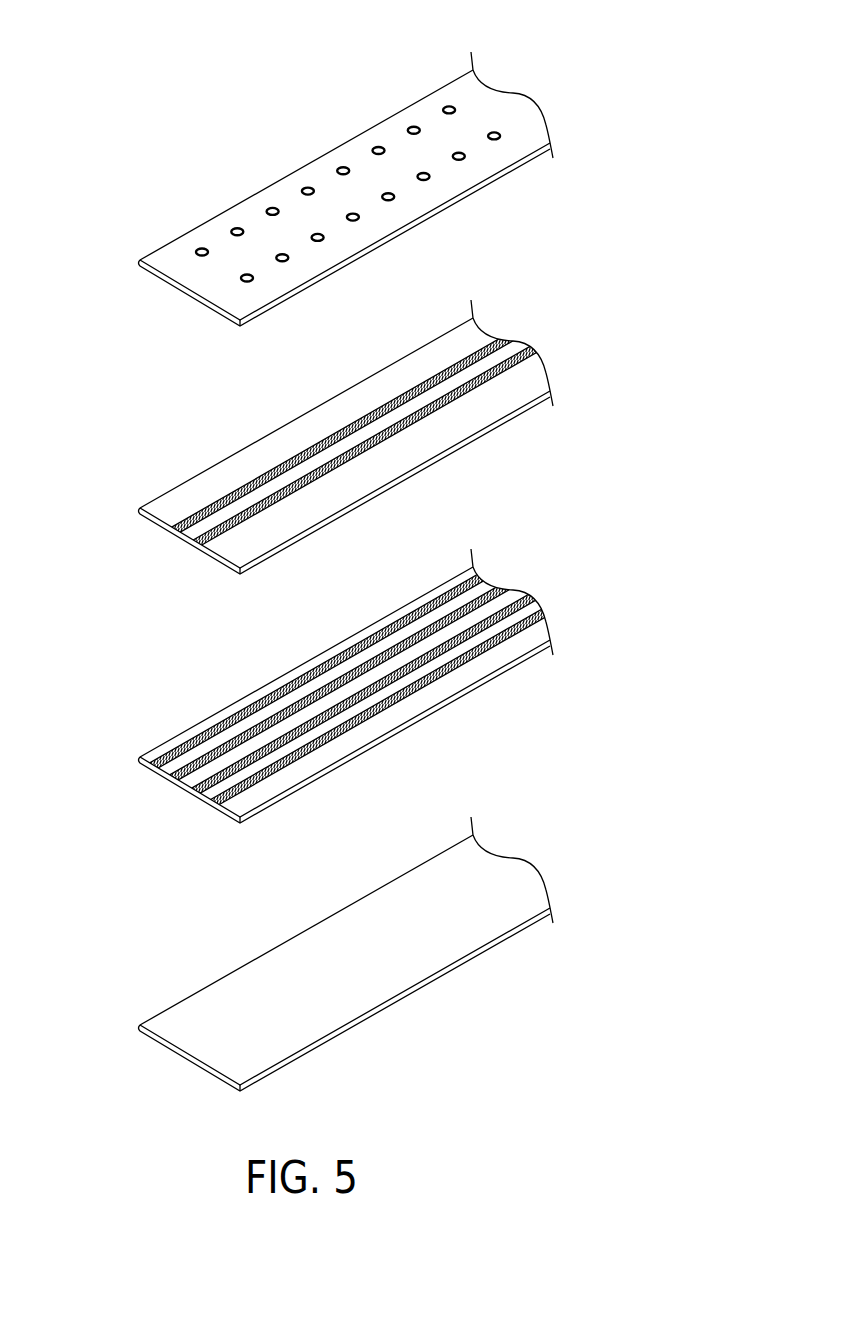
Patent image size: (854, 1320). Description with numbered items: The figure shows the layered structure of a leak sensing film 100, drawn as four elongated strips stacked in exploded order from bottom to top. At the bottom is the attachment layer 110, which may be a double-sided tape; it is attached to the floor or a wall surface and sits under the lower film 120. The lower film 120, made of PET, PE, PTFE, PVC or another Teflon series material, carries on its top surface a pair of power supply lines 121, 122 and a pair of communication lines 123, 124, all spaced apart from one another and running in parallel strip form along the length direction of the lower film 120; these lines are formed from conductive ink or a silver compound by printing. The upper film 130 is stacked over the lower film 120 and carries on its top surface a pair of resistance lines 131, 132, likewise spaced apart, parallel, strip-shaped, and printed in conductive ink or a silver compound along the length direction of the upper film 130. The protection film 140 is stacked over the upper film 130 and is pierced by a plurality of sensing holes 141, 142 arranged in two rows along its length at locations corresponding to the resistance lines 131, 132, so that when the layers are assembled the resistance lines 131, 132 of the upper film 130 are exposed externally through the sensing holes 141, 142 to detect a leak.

The leak sensing film 100 is at (108, 83).
The attachment layer 110 is at (147, 1032).
The lower film 120 is at (298, 675).
The power supply line 121 is at (212, 730).
The power supply line 122 is at (272, 723).
The communication line 123 is at (347, 708).
The communication line 124 is at (427, 682).
The upper film 130 is at (304, 437).
The resistance line 131 is at (266, 480).
The resistance line 132 is at (348, 456).
The protection film 140 is at (299, 189).
The sensing hole 141 is at (203, 247).
The sensing hole 142 is at (248, 272).